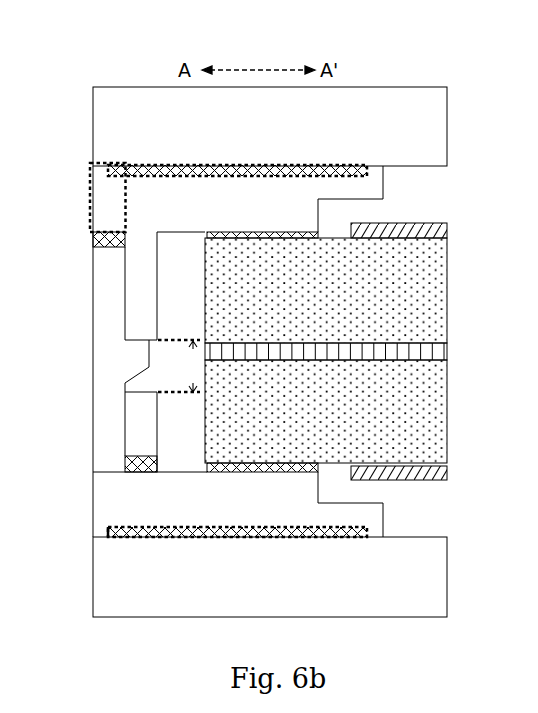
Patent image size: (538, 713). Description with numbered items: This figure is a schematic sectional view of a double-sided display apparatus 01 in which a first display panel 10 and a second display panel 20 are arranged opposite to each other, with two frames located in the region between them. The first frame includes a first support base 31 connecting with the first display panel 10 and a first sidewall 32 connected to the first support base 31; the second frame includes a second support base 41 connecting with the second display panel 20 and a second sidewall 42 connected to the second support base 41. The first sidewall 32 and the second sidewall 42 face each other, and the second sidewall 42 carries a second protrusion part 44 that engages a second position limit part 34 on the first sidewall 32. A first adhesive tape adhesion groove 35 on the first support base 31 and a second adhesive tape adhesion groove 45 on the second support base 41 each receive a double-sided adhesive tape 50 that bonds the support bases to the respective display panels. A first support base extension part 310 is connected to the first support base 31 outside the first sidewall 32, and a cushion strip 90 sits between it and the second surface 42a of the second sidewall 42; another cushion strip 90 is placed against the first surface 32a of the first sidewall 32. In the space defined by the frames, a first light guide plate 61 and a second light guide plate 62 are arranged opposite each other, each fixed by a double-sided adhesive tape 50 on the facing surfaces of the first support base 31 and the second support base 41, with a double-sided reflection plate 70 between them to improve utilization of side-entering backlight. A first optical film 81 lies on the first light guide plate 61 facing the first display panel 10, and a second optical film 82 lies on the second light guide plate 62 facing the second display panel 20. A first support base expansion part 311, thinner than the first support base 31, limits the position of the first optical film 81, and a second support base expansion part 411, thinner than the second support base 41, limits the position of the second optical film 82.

The double-sided display apparatus 01 is at (83, 72).
The first display panel 10 is at (447, 125).
The second display panel 20 is at (447, 575).
The first support base 31 is at (262, 193).
The first support base expansion part 311 is at (362, 183).
The first sidewall 32 is at (140, 247).
The first surface 32a is at (152, 452).
The second position limit part 34 is at (195, 366).
The first adhesive tape adhesion groove 35 is at (96, 166).
The first support base extension part 310 is at (89, 195).
The second support base 41 is at (233, 508).
The second support base expansion part 411 is at (358, 520).
The second sidewall 42 is at (108, 367).
The second surface 42a is at (112, 248).
The second protrusion part 44 is at (130, 358).
The second adhesive tape adhesion groove 45 is at (108, 528).
The double-sided adhesive tape 50 is at (182, 170).
The first light guide plate 61 is at (435, 293).
The second light guide plate 62 is at (440, 413).
The double-sided reflection plate 70 is at (438, 349).
The first optical film 81 is at (440, 227).
The second optical film 82 is at (440, 470).
The cushion strip 90 is at (92, 238).